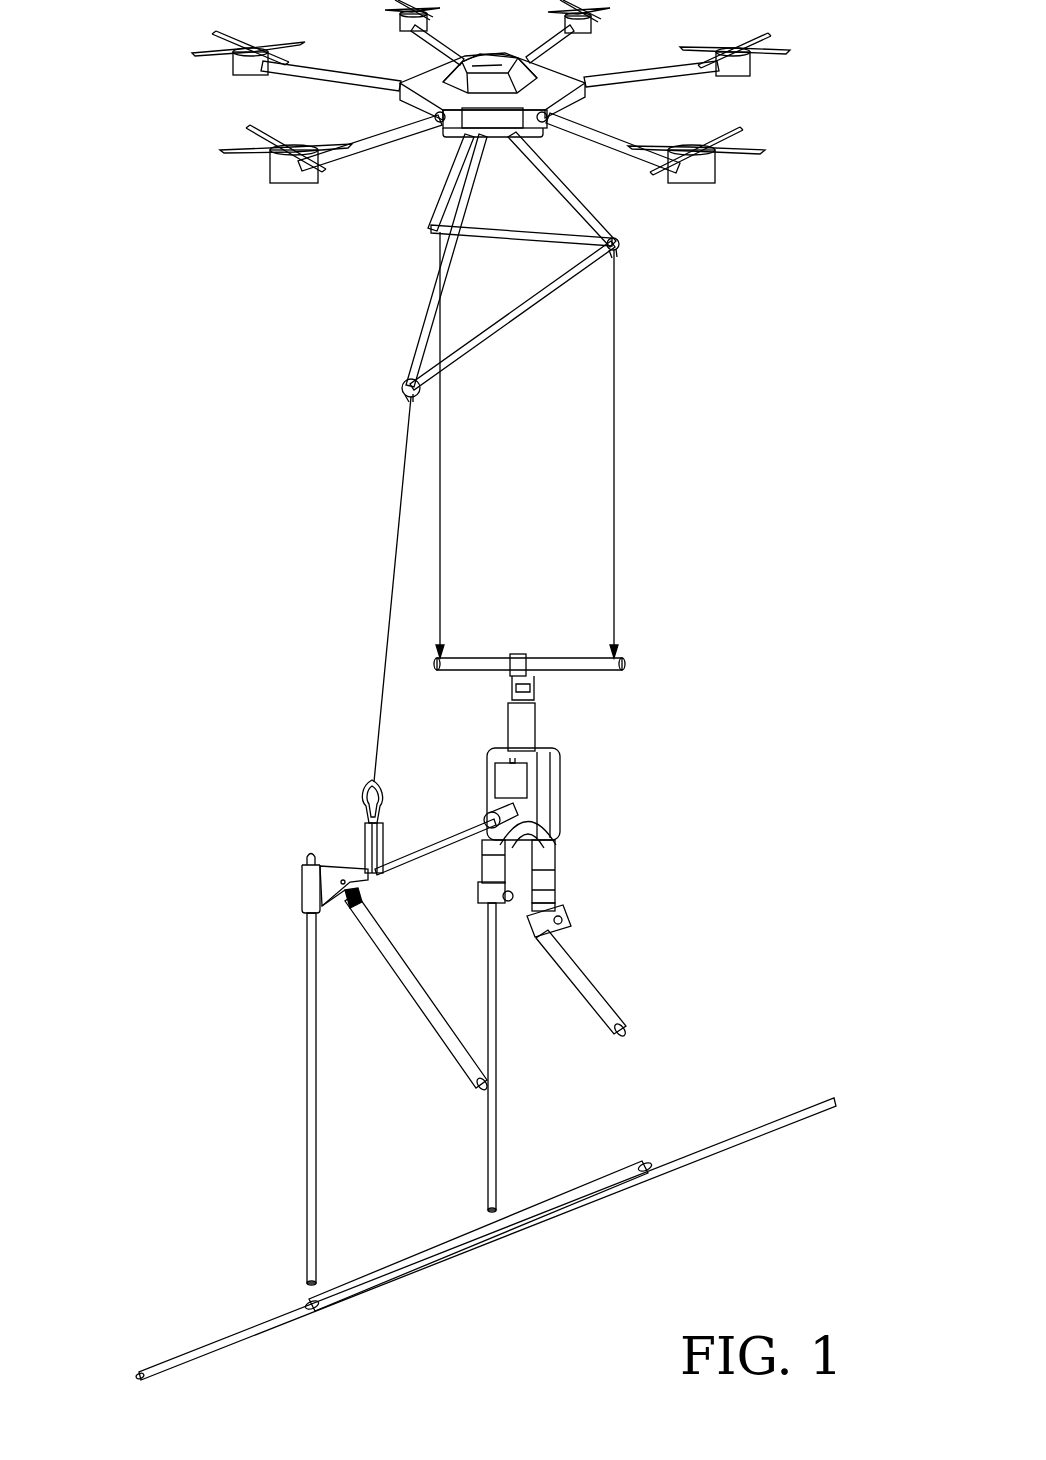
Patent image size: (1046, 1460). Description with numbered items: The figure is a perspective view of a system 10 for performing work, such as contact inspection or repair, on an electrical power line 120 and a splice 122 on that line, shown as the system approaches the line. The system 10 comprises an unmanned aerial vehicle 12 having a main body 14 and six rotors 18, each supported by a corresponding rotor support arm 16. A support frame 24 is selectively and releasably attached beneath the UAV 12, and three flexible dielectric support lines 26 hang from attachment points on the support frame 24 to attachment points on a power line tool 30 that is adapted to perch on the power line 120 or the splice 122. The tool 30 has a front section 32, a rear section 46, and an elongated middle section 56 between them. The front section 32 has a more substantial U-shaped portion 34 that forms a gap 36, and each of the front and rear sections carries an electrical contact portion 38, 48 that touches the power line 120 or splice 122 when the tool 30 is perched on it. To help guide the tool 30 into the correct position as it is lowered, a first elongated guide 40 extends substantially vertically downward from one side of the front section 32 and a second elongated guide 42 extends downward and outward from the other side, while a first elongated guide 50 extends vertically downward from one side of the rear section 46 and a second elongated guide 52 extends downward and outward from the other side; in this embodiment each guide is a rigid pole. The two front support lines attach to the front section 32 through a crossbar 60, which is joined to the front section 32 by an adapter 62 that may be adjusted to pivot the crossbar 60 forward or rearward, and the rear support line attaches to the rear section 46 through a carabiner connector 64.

The system 10 is at (210, 702).
The unmanned aerial vehicle 12 is at (675, 108).
The main body 14 is at (420, 100).
The rotor support arms 16 is at (333, 72).
The rotors 18 is at (235, 55).
The support frame 24 is at (600, 215).
The flexible dielectric support lines 26 is at (615, 378).
The power line tool 30 is at (665, 872).
The front section 32 is at (570, 788).
The U-shaped portion 34 is at (545, 893).
The gap 36 is at (520, 900).
The electrical contact portion 38 is at (540, 840).
The first elongated guide 40 is at (498, 1135).
The second elongated guide 42 is at (600, 975).
The rear section 46 is at (305, 895).
The electrical contact portion 48 is at (330, 905).
The first elongated guide 50 is at (305, 1085).
The second elongated guide 52 is at (458, 1068).
The elongated middle section 56 is at (425, 845).
The crossbar 60 is at (475, 656).
The adapter 62 is at (532, 687).
The carabiner connector 64 is at (362, 795).
The electrical power line 120 is at (778, 1120).
The splice 122 is at (535, 1235).